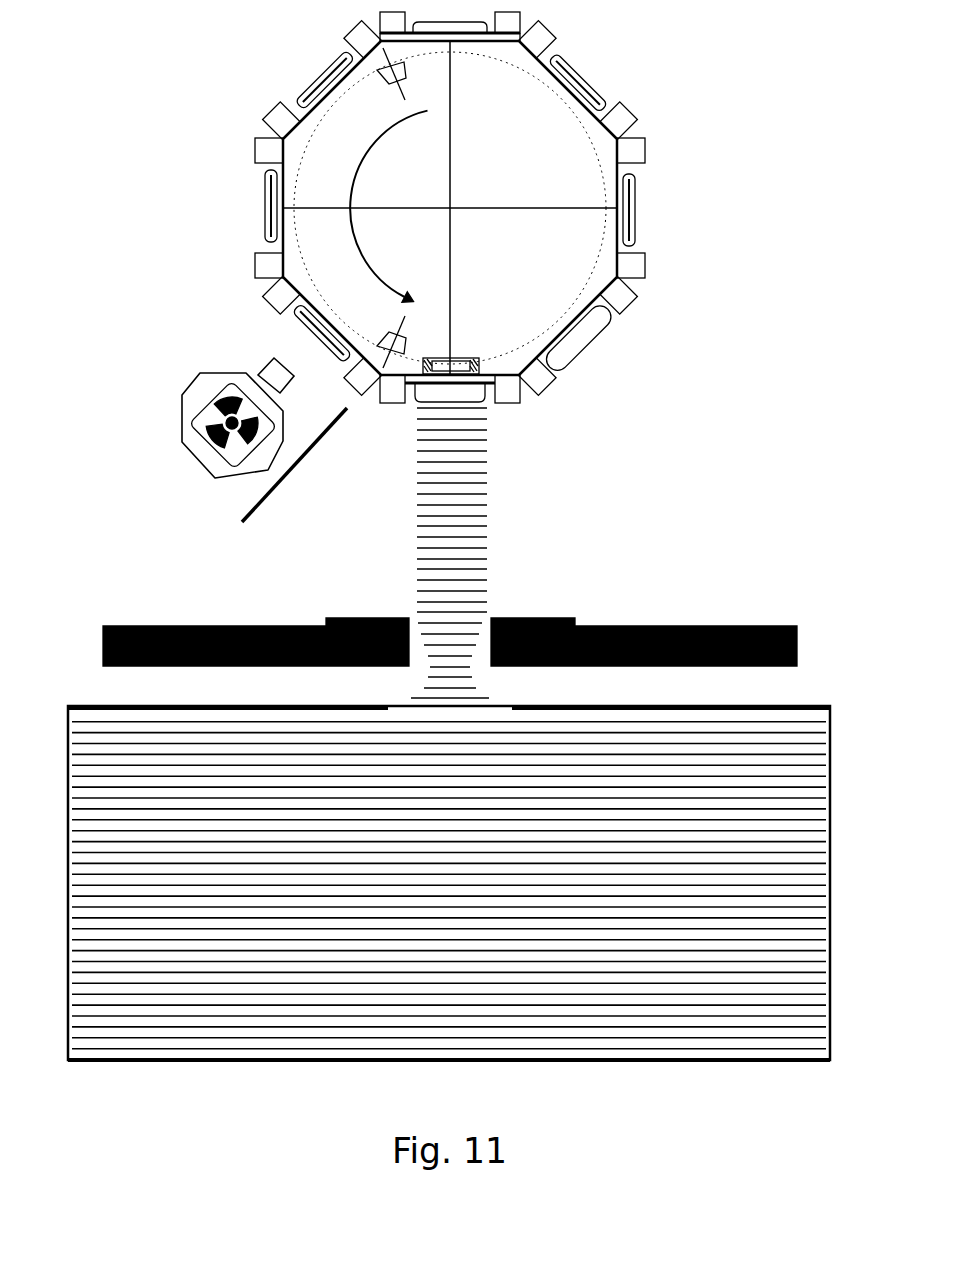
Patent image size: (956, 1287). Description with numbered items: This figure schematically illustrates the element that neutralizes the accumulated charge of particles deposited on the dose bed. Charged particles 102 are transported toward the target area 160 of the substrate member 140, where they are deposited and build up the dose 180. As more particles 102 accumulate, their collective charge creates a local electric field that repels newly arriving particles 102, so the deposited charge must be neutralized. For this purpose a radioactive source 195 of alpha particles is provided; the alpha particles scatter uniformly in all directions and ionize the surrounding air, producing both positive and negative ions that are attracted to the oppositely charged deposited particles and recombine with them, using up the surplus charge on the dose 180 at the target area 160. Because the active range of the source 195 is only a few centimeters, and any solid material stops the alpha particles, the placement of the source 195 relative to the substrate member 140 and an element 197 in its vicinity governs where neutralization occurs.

The substrate member 140 is at (257, 137).
The target area 160 is at (262, 245).
The dose 180 is at (643, 205).
The charged particles 102 is at (486, 448).
The radioactive source 195 is at (185, 448).
The collimator plate 197 is at (285, 482).